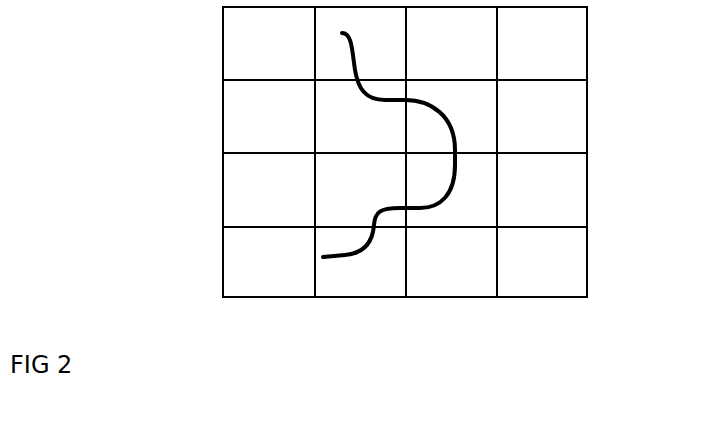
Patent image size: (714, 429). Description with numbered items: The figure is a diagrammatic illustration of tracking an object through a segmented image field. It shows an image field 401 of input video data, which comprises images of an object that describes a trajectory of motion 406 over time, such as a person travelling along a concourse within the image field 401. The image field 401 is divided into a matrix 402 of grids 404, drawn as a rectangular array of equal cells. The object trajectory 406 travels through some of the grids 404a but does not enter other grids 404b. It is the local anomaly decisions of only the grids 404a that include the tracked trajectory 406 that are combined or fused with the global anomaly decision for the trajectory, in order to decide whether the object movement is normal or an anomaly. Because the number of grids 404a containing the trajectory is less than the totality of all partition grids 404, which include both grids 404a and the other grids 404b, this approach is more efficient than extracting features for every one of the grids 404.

The image field 401 is at (210, 302).
The matrix 402 is at (222, 190).
The grids 404 is at (237, 54).
The grids including the object trajectory 404a is at (332, 287).
The other grids 404b is at (435, 287).
The trajectory of motion 406 is at (455, 166).